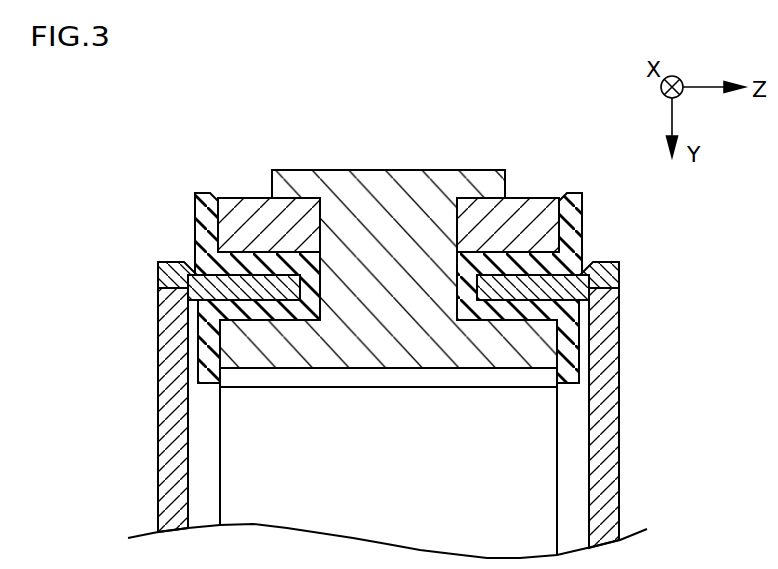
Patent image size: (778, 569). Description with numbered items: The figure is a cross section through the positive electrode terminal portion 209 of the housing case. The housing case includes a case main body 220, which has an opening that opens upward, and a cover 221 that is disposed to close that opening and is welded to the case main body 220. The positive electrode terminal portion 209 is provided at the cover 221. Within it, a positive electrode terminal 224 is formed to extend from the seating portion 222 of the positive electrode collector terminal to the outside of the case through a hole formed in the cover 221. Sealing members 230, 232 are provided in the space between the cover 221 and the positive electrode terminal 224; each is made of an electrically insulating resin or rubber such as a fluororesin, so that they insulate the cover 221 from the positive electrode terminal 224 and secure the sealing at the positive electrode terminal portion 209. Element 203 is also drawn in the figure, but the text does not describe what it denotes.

The positive electrode terminal portion 209 is at (217, 133).
The positive electrode terminal 224 is at (391, 205).
The seating portion 222 is at (540, 347).
The sealing member 232 is at (197, 211).
The sealing member 230 is at (218, 312).
The cover 221 is at (179, 268).
The case main body 220 is at (170, 404).
The holder 203 is at (538, 478).